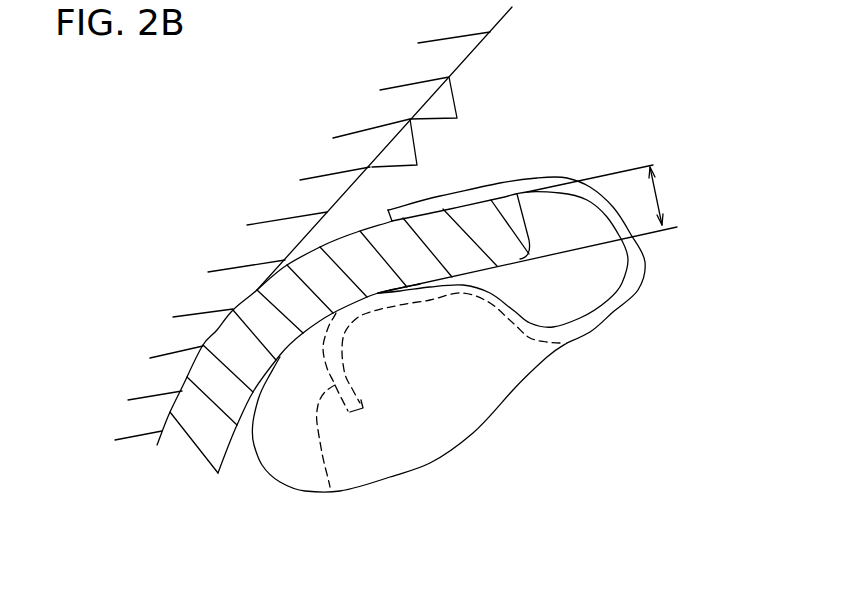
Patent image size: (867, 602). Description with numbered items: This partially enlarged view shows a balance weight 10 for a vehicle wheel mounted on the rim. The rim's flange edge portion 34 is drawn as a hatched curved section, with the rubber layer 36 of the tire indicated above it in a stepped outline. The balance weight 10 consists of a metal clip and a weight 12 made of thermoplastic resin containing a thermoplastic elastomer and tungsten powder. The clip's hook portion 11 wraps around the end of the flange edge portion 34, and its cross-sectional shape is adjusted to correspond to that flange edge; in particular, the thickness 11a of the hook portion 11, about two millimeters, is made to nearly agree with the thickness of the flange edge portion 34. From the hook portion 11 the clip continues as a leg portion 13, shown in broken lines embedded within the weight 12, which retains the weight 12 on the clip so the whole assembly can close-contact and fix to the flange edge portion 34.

The balance weight 10 is at (603, 353).
The hook portion 11 is at (642, 257).
The thickness of the hook portion 11a is at (655, 193).
The weight 12 is at (455, 420).
The leg portion 13 is at (332, 487).
The flange edge portion 34 is at (217, 443).
The rubber layer 36 is at (455, 55).